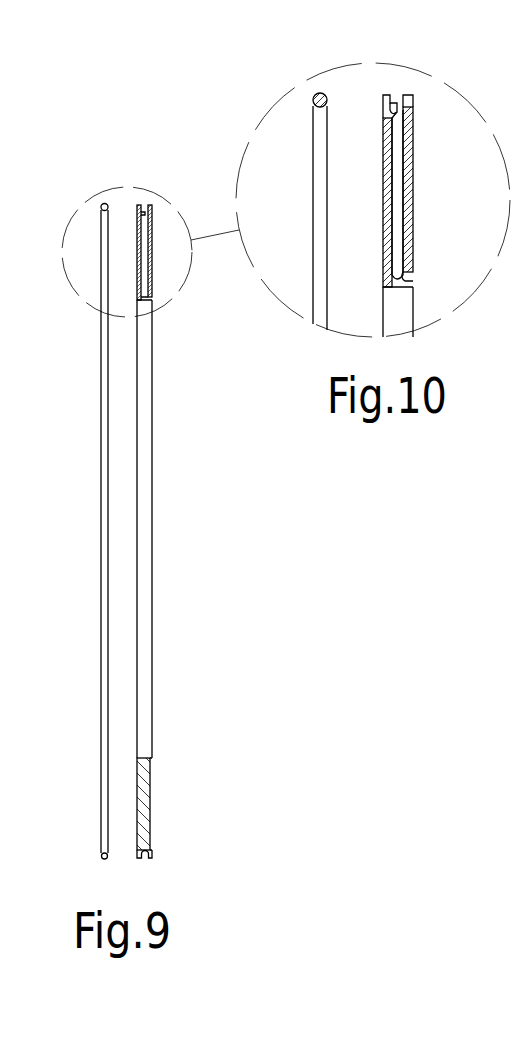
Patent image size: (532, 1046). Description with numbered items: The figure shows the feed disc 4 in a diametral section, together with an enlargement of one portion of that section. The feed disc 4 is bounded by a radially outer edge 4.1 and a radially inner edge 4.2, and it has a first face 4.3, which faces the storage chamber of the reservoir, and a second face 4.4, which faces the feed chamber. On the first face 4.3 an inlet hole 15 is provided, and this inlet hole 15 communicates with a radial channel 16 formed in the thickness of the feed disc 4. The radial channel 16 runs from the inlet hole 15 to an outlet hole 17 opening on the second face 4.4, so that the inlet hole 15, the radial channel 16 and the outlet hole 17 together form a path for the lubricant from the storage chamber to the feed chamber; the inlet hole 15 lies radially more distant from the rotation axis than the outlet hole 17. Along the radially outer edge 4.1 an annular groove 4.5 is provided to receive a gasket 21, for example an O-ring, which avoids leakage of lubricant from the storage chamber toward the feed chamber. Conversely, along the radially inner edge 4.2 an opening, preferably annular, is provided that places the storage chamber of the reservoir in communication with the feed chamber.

In FIG. 9, the feed disc 4 is at (145, 543).
In FIG. 9, the radially outer edge 4.1 is at (152, 856).
In FIG. 10, the radially outer edge 4.1 is at (412, 100).
In FIG. 9, the radially inner edge 4.2 is at (140, 302).
In FIG. 10, the radially inner edge 4.2 is at (397, 292).
In FIG. 9, the first face 4.3 is at (137, 785).
In FIG. 10, the first face 4.3 is at (381, 204).
In FIG. 9, the second face 4.4 is at (154, 810).
In FIG. 10, the second face 4.4 is at (415, 182).
In FIG. 9, the annular groove 4.5 is at (145, 858).
In FIG. 10, the annular groove 4.5 is at (397, 112).
In FIG. 10, the inlet hole 15 is at (387, 113).
In FIG. 10, the radial channel 16 is at (398, 221).
In FIG. 10, the outlet hole 17 is at (408, 277).
In FIG. 9, the gasket 21 is at (97, 857).
In FIG. 10, the gasket 21 is at (312, 100).